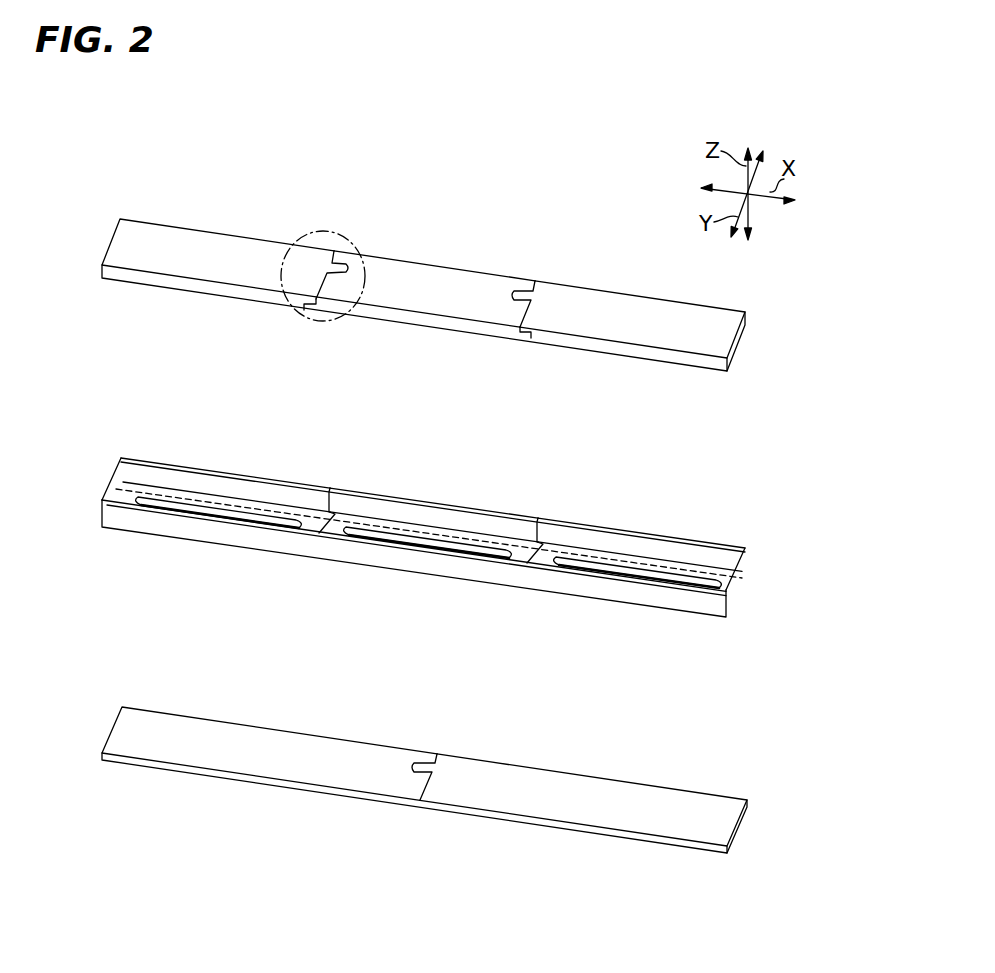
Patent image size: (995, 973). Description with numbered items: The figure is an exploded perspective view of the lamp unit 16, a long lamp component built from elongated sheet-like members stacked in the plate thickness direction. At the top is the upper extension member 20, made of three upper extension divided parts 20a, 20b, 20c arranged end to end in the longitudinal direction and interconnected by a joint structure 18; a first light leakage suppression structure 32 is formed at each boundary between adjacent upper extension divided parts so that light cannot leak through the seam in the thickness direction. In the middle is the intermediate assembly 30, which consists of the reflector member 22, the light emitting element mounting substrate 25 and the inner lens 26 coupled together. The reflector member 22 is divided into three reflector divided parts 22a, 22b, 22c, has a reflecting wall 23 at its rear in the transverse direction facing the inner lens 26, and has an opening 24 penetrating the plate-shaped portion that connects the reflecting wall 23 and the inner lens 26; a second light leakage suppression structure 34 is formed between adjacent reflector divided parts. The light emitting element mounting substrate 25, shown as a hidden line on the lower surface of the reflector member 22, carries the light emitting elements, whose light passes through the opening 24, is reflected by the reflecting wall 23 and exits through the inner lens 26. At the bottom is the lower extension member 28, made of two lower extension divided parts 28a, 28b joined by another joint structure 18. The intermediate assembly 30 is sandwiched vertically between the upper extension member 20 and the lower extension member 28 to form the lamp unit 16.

The lamp unit 16 is at (420, 967).
The joint structure 18 is at (323, 226).
The upper extension member 20 is at (457, 282).
The upper extension divided part 20a is at (200, 245).
The upper extension divided part 20b is at (430, 276).
The upper extension divided part 20c is at (630, 310).
The reflector member 22 is at (459, 525).
The reflector divided part 22a is at (198, 480).
The reflector divided part 22b is at (425, 510).
The reflector divided part 22c is at (648, 546).
The reflecting wall 23 is at (130, 468).
The opening 24 is at (125, 505).
The light emitting element mounting substrate 25 is at (742, 578).
The inner lens 26 is at (725, 605).
The lower extension member 28 is at (457, 773).
The lower extension divided part 28a is at (285, 750).
The lower extension divided part 28b is at (603, 790).
The intermediate assembly 30 is at (457, 544).
The first light leakage suppression structure 32 is at (308, 320).
The second light leakage suppression structure 34 is at (331, 479).